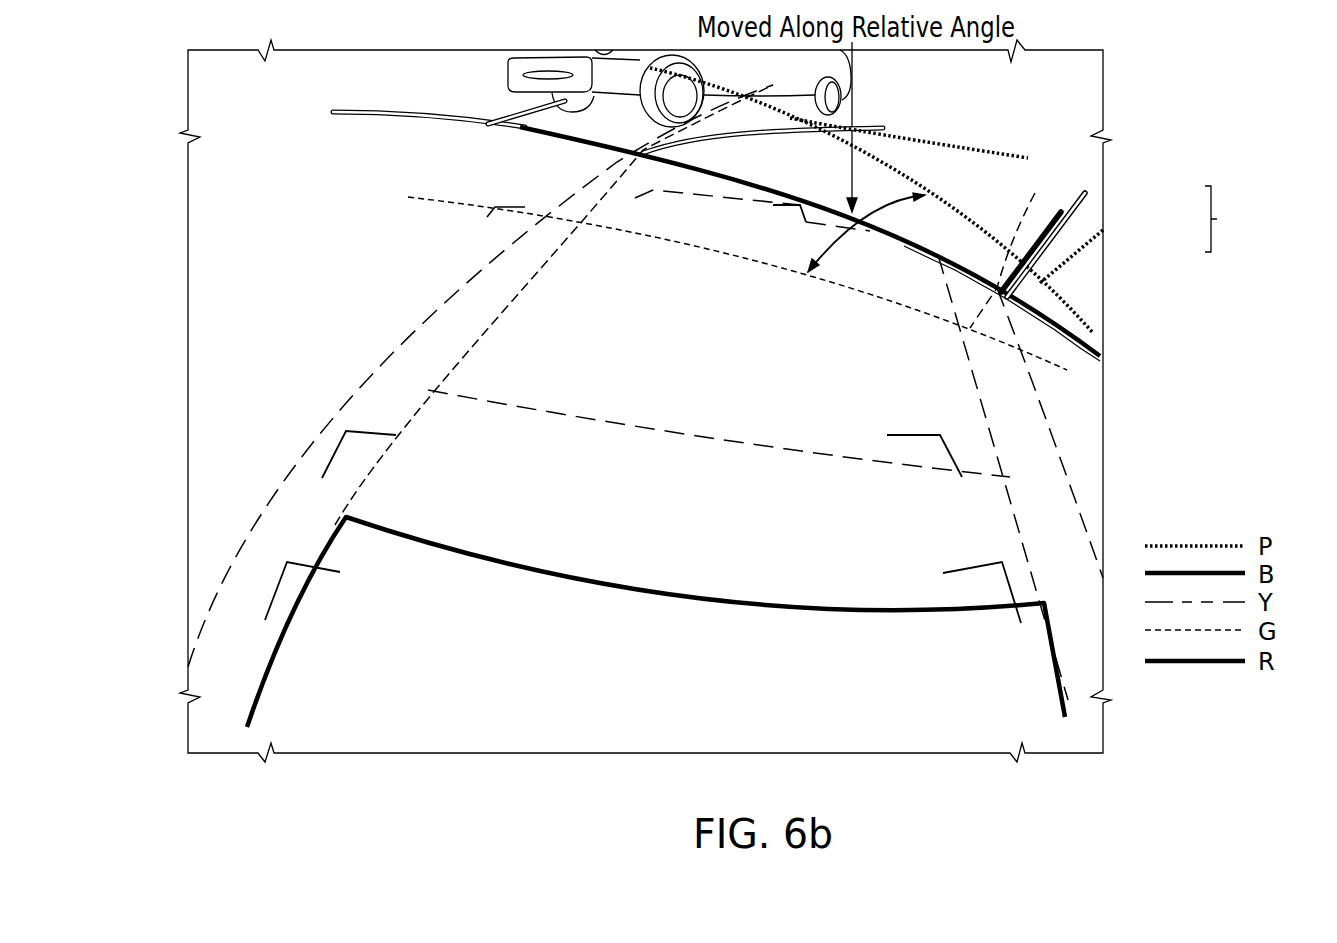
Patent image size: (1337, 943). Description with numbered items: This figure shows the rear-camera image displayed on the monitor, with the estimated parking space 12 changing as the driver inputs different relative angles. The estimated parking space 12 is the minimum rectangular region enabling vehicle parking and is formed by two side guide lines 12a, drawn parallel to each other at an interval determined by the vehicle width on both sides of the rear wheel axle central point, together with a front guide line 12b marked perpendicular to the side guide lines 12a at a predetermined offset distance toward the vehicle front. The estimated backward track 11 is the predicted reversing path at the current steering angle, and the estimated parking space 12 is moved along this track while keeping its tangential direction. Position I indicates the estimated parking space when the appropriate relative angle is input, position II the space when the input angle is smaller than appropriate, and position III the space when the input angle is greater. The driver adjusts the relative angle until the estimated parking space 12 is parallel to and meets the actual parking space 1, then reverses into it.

The actual parking space 1 is at (991, 186).
The estimated backward track 11 is at (462, 352).
The estimated parking space 12 is at (1225, 219).
The side guide lines 12a is at (1036, 249).
The front guide line 12b is at (923, 248).
The estimated parking space at appropriate relative angle I is at (449, 109).
The estimated parking space at smaller relative angle II is at (721, 271).
The estimated parking space at greater relative angle III is at (750, 106).